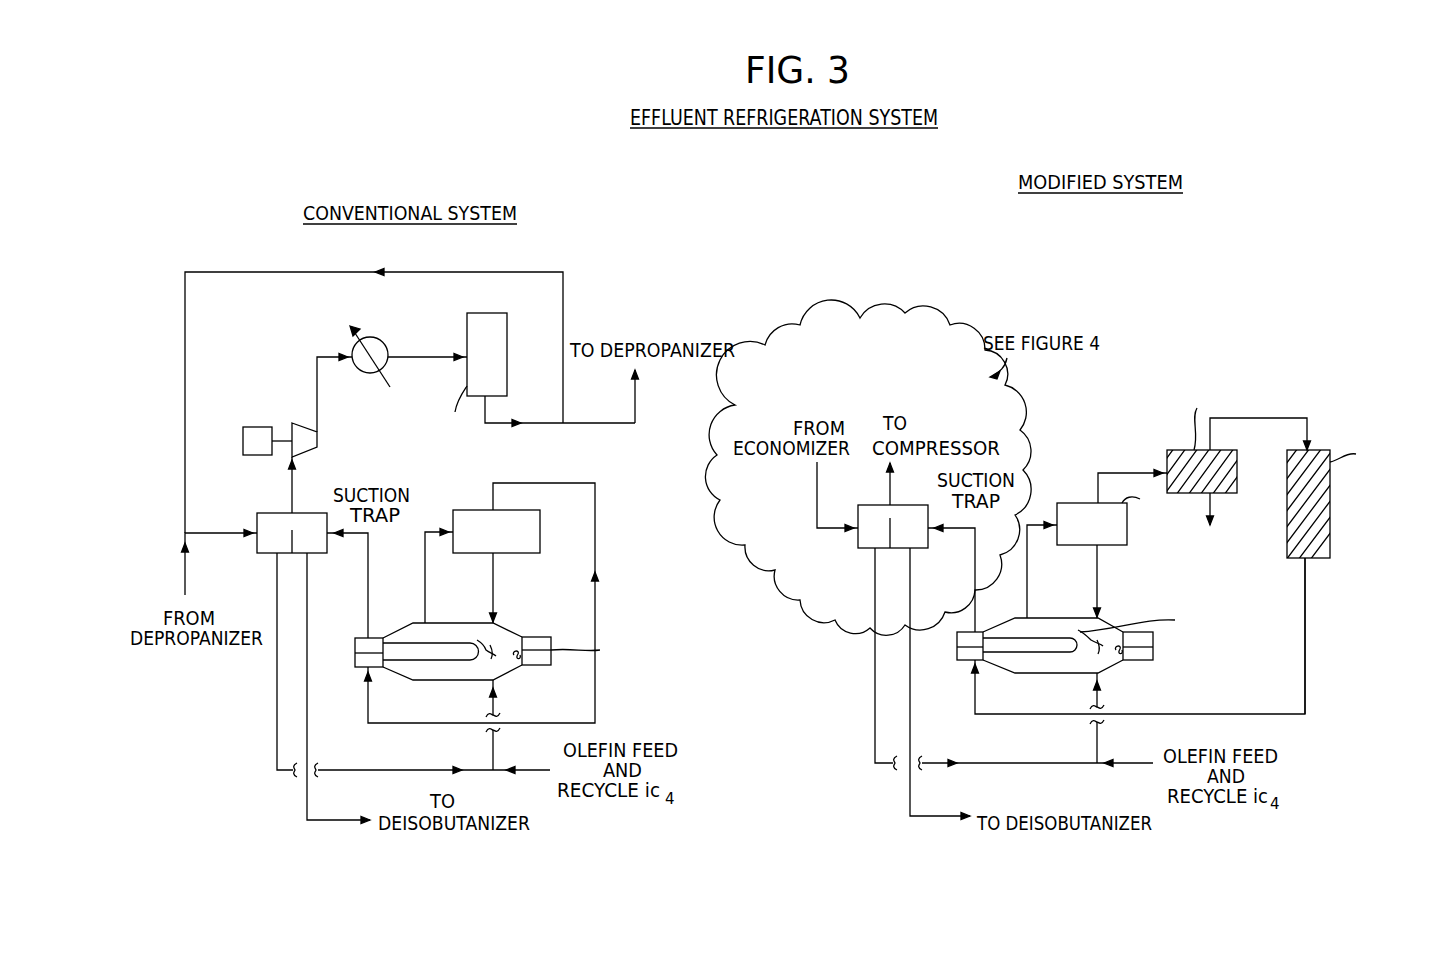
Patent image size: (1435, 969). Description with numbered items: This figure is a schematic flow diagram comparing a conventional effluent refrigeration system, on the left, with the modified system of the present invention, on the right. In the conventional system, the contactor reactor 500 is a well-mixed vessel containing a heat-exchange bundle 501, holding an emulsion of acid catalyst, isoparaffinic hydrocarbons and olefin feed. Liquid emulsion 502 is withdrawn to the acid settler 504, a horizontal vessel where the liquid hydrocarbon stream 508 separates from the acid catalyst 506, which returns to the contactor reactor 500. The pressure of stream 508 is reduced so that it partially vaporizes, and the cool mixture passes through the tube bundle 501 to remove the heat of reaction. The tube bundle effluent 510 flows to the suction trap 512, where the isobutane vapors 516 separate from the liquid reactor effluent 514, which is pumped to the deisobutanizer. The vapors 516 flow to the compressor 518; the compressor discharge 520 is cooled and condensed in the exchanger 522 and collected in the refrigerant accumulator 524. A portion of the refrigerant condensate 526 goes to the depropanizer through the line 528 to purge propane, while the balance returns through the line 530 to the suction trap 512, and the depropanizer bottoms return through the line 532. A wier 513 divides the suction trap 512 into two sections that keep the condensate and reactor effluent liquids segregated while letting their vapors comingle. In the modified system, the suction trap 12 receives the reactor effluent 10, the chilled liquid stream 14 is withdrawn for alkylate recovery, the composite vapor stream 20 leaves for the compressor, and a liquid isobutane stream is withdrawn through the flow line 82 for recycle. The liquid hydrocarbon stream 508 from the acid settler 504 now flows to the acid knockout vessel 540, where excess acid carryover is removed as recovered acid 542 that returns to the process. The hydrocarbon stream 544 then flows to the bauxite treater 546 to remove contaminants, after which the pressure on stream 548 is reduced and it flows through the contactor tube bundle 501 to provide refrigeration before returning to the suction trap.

The condensate return line 530 is at (185, 400).
The depropanizer bottoms return line 532 is at (185, 577).
The suction trap 512 is at (261, 510).
The wier 513 is at (290, 537).
The isobutane vapors 516 is at (295, 489).
The compressor 518 is at (308, 437).
The compressor discharge 520 is at (313, 388).
The exchanger 522 is at (388, 343).
The refrigerant accumulator 524 is at (507, 362).
The refrigerant condensate 526 is at (548, 423).
The line to depropanizer 528 is at (635, 413).
The liquid reactor effluent 514 is at (307, 637).
The tube bundle effluent 510 is at (368, 607).
The liquid hydrocarbon stream 508 is at (594, 573).
The acid settler 504 is at (540, 512).
The liquid emulsion 502 is at (425, 605).
The acid catalyst 506 is at (493, 591).
The contactor reactor 500 is at (517, 627).
The heat-exchange bundle 501 is at (415, 665).
The suction trap 12 is at (863, 505).
The composite vapor stream 20 is at (891, 488).
The alkylation reactor effluent 10 is at (975, 555).
The flow line 82 is at (875, 580).
The chilled liquid stream 14 is at (910, 614).
The acid knockout vessel 540 is at (1178, 436).
The recovered acid 542 is at (1210, 511).
The hydrocarbon stream 544 is at (1283, 418).
The bauxite treater 546 is at (1330, 520).
The treated stream 548 is at (1305, 675).